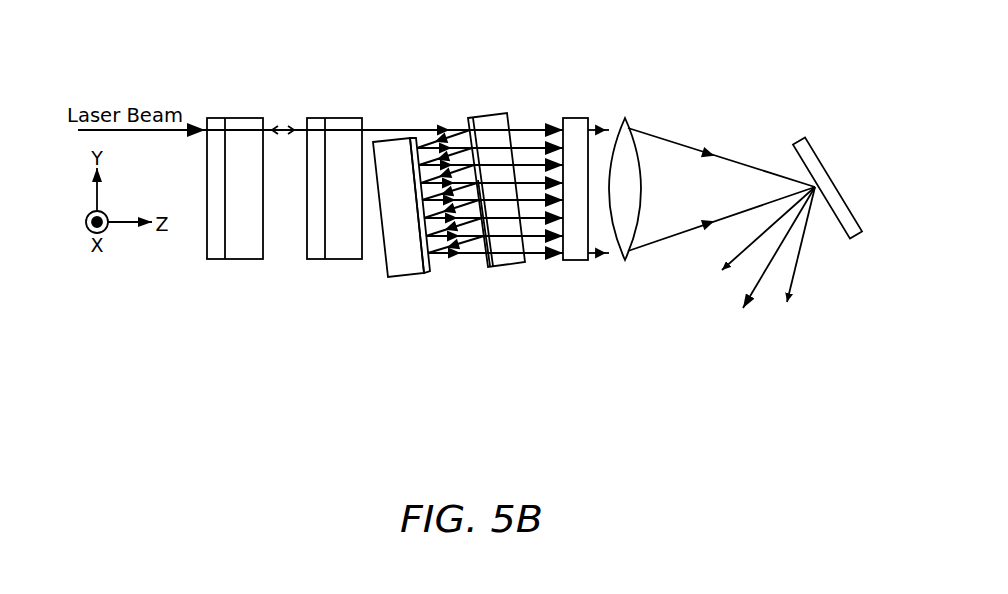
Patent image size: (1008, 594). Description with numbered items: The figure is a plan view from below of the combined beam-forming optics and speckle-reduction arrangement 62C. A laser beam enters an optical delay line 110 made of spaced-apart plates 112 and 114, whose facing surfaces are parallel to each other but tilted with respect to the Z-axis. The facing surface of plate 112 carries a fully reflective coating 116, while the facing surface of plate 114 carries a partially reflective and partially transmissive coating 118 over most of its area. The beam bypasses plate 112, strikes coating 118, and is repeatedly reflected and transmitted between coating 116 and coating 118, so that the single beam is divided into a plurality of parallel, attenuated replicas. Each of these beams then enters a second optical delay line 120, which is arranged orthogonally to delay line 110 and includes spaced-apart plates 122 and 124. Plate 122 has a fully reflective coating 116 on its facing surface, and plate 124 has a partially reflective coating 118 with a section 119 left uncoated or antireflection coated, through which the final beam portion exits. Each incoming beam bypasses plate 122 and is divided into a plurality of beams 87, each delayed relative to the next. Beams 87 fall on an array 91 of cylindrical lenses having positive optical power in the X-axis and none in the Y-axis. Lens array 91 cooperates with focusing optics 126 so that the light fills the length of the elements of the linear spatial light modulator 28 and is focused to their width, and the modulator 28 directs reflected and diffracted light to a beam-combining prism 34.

The optical delay line 110 is at (274, 207).
The plate 112 is at (238, 262).
The plate 114 is at (331, 262).
The fully reflective coating 116 is at (413, 146).
The partially reflective and partially transmissive coating 118 is at (470, 122).
The uncoated section 119 is at (449, 241).
The optical delay line 120 is at (437, 201).
The plate 122 is at (387, 217).
The plate 124 is at (467, 157).
The beams 87 is at (530, 143).
The array of cylindrical lenses 91 is at (580, 116).
The focusing optics 126 is at (634, 119).
The spatial light modulator 28 is at (792, 135).
The beam-combining prism 34 is at (746, 272).
The combined beam-forming optics and speckle-reduction arrangement 62C is at (581, 417).